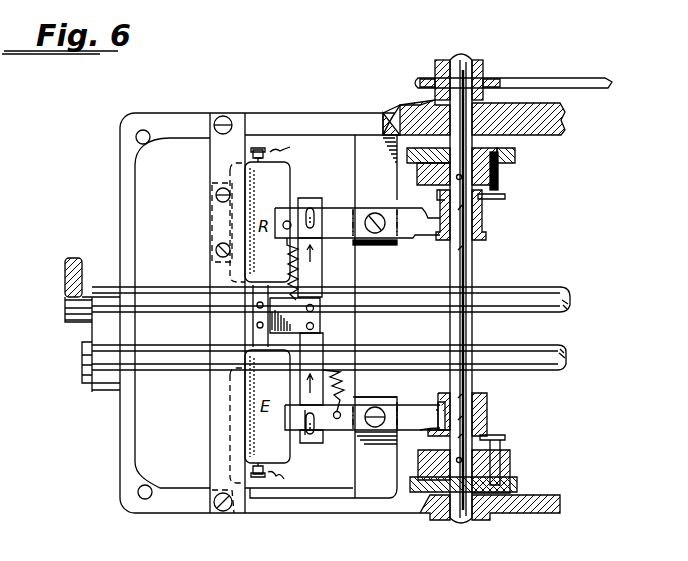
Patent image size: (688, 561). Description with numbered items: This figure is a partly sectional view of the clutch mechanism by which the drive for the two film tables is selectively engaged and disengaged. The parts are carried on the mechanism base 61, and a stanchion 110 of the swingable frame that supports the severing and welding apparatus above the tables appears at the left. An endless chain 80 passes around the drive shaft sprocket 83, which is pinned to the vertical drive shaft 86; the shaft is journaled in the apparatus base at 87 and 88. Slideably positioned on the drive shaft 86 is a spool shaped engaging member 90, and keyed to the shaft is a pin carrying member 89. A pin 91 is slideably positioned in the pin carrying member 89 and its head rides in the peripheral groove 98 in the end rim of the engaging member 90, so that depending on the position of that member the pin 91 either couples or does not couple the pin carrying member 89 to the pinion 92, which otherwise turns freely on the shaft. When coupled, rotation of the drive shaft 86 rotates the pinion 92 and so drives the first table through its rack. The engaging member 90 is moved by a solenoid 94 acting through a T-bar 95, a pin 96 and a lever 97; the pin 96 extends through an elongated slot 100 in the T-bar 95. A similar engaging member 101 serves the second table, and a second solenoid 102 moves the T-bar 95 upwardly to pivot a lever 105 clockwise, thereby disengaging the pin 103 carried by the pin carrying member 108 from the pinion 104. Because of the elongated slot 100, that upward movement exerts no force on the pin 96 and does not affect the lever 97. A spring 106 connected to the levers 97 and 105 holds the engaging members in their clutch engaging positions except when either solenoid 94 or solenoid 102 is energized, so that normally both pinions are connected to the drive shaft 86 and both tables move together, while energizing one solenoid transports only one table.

The mechanism base 61 is at (179, 120).
The endless chain 80 is at (556, 82).
The drive shaft sprocket 83 is at (486, 86).
The drive shaft 86 is at (473, 264).
The journal in apparatus base 87 is at (498, 512).
The journal in apparatus base 88 is at (498, 110).
The pin carrying member 89 is at (510, 465).
The spool shaped engaging member 90 is at (486, 400).
The pin 91 is at (503, 441).
The pinion 92 is at (519, 484).
The solenoid 94 is at (281, 476).
The T-bar 95 is at (347, 392).
The pin 96 is at (318, 434).
The lever 97 is at (345, 430).
The peripheral groove 98 is at (446, 434).
The elongated slot 100 is at (312, 438).
The engaging member 101 is at (478, 220).
The solenoid 102 is at (282, 190).
The pin 103 is at (505, 196).
The pinion 104 is at (512, 155).
The lever 105 is at (418, 232).
The spring 106 is at (330, 276).
The pin carrying member 108 is at (508, 174).
The stanchion 110 is at (80, 260).